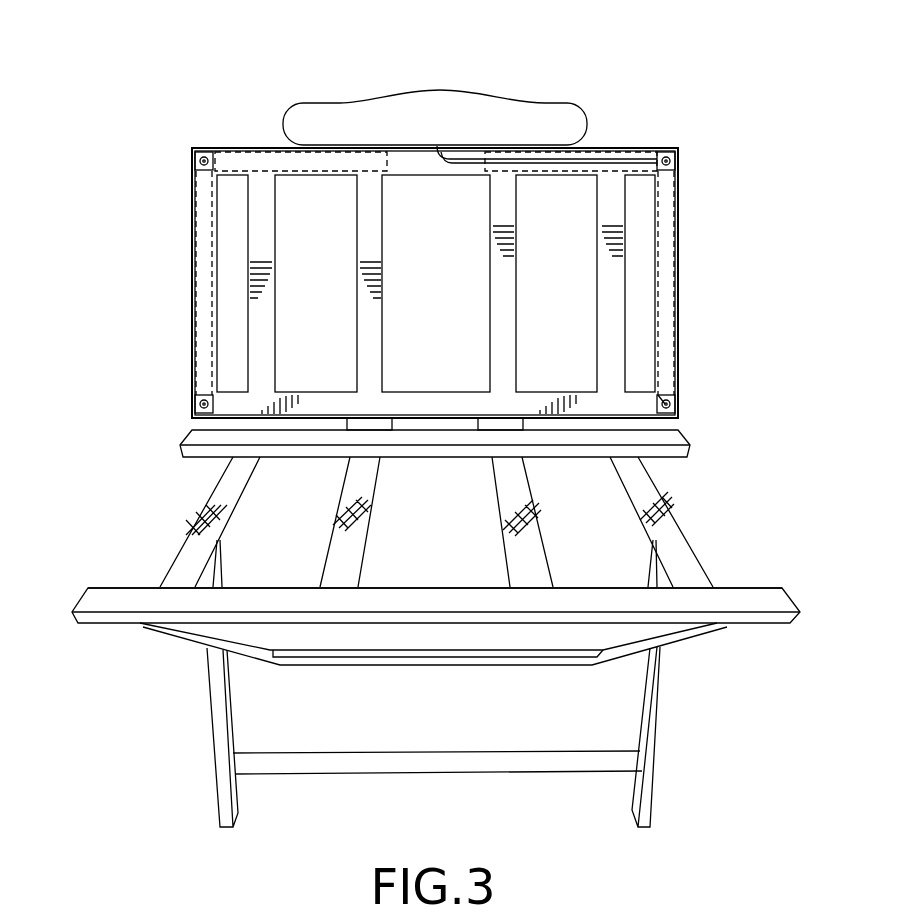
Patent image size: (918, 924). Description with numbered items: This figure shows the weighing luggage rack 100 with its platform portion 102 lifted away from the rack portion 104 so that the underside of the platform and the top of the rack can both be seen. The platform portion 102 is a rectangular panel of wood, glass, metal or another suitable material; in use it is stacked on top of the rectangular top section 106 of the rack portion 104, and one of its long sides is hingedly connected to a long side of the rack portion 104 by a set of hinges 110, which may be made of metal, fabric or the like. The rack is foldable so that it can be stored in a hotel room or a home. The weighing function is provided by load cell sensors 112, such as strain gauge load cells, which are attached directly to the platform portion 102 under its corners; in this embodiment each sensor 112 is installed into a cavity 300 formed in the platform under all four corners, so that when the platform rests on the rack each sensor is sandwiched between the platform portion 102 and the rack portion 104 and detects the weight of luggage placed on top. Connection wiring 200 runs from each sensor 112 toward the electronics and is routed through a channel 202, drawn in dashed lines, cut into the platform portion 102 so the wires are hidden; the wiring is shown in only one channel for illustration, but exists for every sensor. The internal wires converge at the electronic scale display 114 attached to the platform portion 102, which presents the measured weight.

The weighing luggage rack 100 is at (158, 253).
The platform portion 102 is at (368, 247).
The rack portion 104 is at (730, 600).
The top section 106 is at (163, 432).
The hinges 110 is at (500, 425).
The load cell sensors 112 is at (196, 162).
The electronic scale display 114 is at (398, 118).
The connection wiring 200 is at (517, 163).
The channel 202 is at (598, 153).
The cavity 300 is at (660, 394).